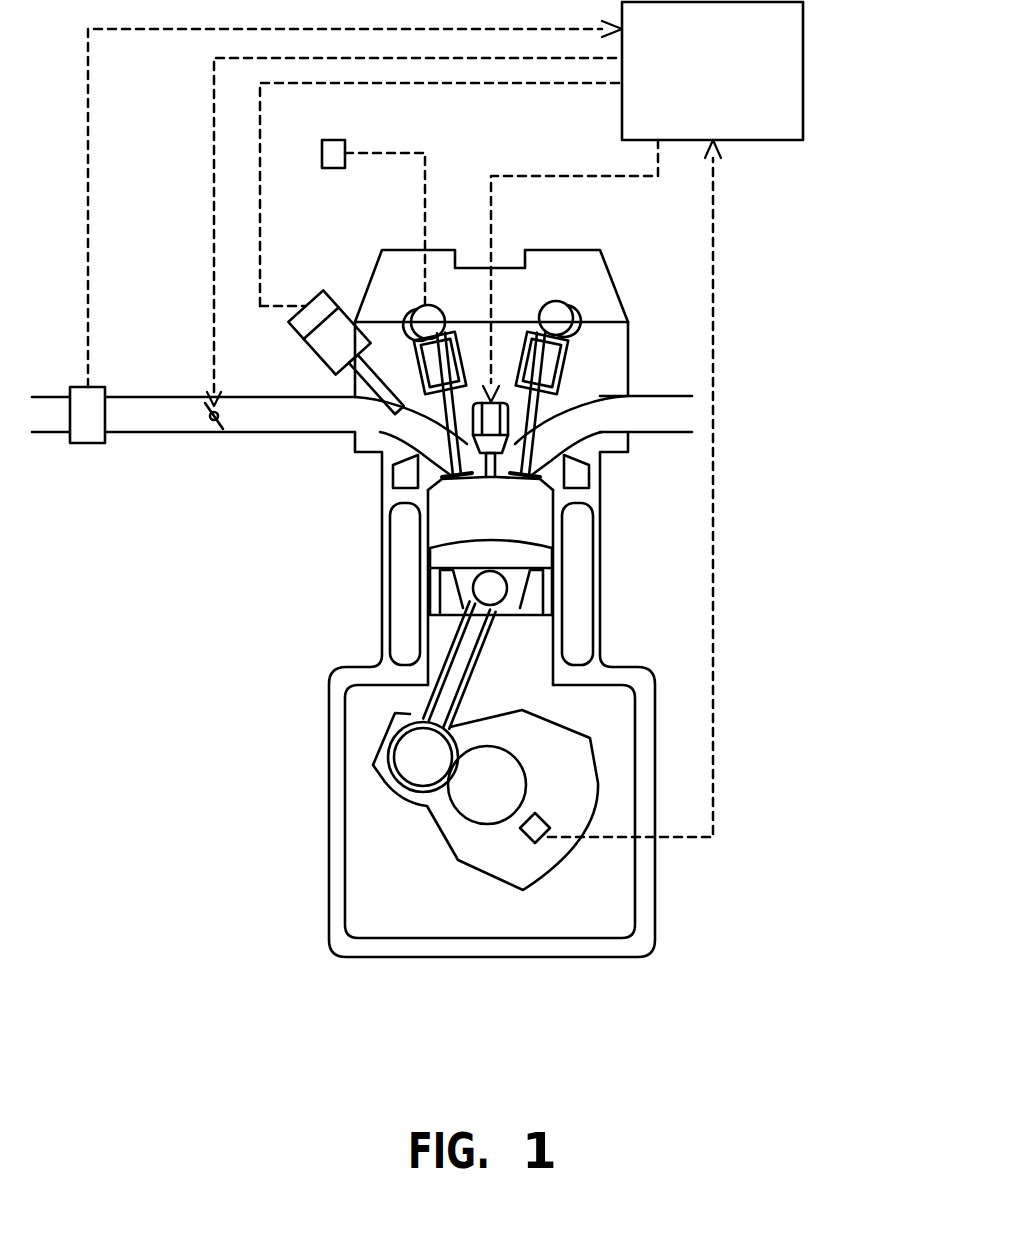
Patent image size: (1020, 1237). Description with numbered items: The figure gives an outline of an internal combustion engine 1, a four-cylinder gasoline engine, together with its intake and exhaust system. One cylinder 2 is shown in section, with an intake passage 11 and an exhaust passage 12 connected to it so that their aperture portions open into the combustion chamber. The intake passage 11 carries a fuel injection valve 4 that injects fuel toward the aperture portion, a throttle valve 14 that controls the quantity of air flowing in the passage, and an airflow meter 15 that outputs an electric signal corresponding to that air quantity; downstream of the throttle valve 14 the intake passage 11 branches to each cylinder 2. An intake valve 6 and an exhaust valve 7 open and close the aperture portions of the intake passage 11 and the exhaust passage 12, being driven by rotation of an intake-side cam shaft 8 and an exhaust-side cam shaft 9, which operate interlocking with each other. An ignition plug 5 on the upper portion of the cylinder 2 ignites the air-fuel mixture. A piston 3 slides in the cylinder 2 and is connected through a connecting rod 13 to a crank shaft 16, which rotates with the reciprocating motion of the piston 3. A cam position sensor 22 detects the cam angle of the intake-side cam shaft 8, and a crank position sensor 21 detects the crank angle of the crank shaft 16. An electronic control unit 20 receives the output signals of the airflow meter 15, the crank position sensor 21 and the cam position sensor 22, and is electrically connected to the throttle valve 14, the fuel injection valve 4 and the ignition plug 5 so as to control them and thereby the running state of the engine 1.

The internal combustion engine 1 is at (274, 682).
The cylinder 2 is at (438, 534).
The piston 3 is at (518, 578).
The fuel injection valve 4 is at (320, 298).
The ignition plug 5 is at (490, 478).
The intake valve 6 is at (478, 402).
The exhaust valve 7 is at (512, 385).
The intake-side cam shaft 8 is at (412, 303).
The exhaust-side cam shaft 9 is at (567, 303).
The intake passage 11 is at (143, 396).
The exhaust passage 12 is at (660, 394).
The connecting rod 13 is at (410, 714).
The throttle valve 14 is at (212, 420).
The airflow meter 15 is at (84, 444).
The crank shaft 16 is at (455, 817).
The electronic control unit 20 is at (803, 80).
The crank position sensor 21 is at (527, 842).
The cam position sensor 22 is at (335, 139).